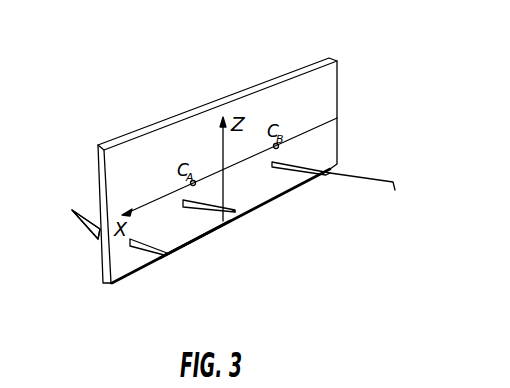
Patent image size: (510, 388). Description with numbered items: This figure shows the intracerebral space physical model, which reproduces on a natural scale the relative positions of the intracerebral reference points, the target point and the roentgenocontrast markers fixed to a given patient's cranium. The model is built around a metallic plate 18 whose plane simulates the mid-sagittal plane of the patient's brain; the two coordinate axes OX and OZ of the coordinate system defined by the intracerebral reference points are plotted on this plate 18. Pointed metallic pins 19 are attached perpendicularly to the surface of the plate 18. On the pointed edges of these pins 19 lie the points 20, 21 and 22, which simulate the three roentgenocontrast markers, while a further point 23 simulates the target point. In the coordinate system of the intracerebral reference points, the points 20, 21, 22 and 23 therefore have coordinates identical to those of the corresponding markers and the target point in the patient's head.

The metallic plate 18 is at (148, 147).
The pointed metallic pins 19 is at (193, 207).
The point 20 is at (363, 195).
The point 21 is at (78, 208).
The point 22 is at (165, 252).
The point 23 is at (235, 212).